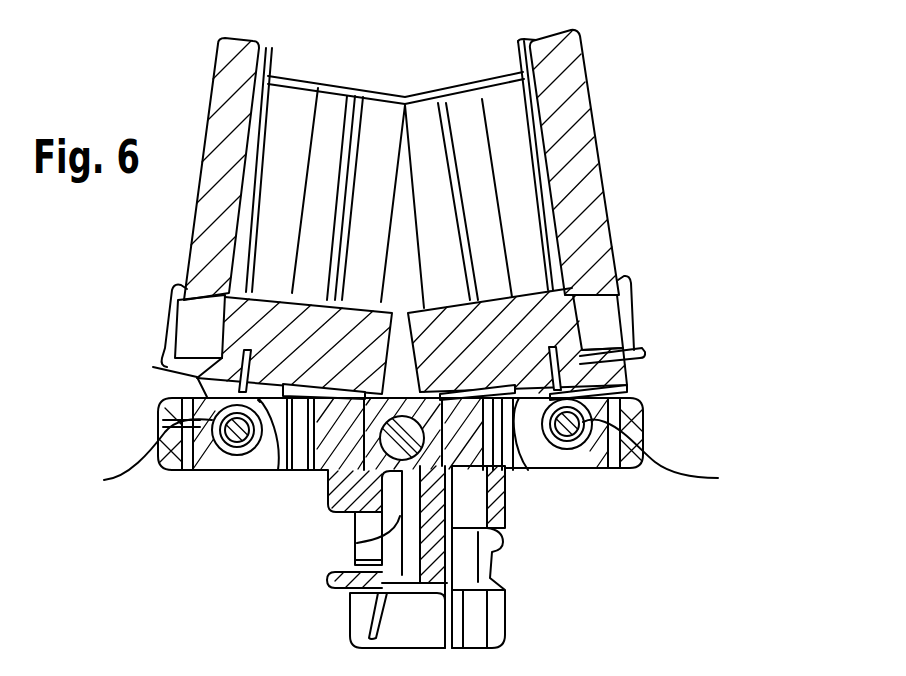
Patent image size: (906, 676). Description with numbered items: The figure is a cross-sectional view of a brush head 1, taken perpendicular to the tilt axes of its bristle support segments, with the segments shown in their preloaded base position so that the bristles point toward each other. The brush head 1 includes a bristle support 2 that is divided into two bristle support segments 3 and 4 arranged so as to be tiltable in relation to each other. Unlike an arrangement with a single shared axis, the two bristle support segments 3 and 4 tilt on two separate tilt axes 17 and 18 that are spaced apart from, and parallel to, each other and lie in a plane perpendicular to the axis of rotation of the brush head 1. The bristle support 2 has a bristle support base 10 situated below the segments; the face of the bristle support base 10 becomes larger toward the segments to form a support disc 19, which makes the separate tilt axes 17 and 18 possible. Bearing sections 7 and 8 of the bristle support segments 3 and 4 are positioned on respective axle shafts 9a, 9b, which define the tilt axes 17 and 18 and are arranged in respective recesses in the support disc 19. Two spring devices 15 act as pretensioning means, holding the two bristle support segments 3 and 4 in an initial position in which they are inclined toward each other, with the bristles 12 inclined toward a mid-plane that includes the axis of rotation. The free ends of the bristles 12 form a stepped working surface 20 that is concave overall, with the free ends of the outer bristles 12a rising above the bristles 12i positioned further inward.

The brush head 1 is at (670, 126).
The bristle support 2 is at (616, 481).
The bristle support segment 3 is at (640, 353).
The bristle support segment 4 is at (162, 364).
The bearing section 7 is at (539, 448).
The bearing section 8 is at (263, 452).
The axle shaft 9a is at (135, 463).
The axle shaft 9b is at (671, 462).
The bristle support base 10 is at (356, 545).
The bristles 12 is at (546, 231).
The outer bristles 12a is at (572, 86).
The inner bristles 12i is at (294, 117).
The spring device 15 is at (614, 388).
The tilt axis 17 is at (568, 450).
The tilt axis 18 is at (237, 452).
The support disc 19 is at (160, 416).
The working surface 20 is at (384, 93).